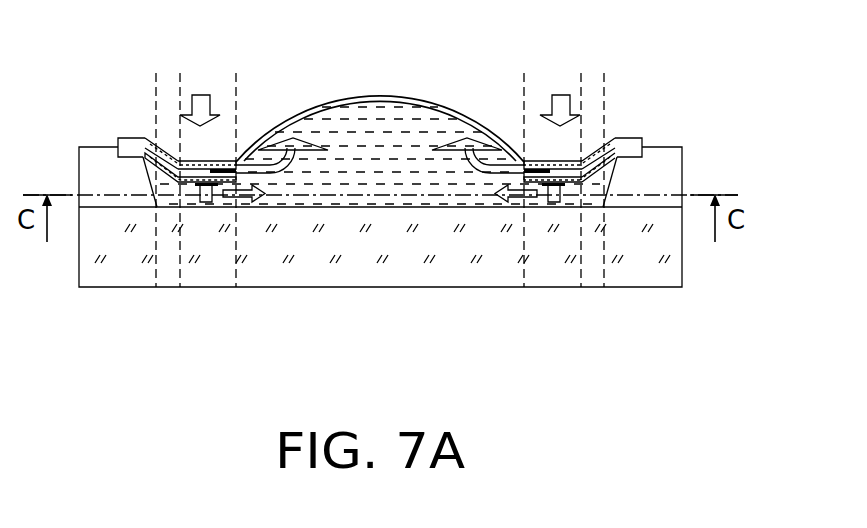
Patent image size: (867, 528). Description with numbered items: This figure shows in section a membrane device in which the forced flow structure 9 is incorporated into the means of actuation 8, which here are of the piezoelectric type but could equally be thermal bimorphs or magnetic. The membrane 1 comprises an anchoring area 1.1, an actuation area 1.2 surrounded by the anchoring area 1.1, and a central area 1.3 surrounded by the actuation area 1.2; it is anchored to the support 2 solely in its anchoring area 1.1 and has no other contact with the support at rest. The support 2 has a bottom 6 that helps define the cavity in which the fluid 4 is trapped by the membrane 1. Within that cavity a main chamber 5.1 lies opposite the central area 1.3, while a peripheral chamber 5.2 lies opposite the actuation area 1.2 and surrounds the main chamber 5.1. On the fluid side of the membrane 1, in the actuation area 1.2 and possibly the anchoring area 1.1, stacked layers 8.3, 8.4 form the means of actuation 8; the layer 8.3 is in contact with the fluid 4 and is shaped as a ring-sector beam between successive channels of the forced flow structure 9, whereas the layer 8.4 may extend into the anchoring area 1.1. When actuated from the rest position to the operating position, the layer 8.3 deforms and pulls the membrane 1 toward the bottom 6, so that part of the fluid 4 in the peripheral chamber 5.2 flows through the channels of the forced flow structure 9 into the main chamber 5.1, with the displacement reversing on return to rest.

The membrane 1 is at (391, 93).
The anchoring area 1.1 is at (633, 138).
The actuation area 1.2 is at (540, 160).
The central area 1.3 is at (443, 107).
The support 2 is at (660, 262).
The fluid 4 is at (365, 128).
The main chamber 5.1 is at (387, 185).
The peripheral chamber 5.2 is at (168, 187).
The bottom 6 is at (484, 207).
The means of actuation 8 is at (285, 77).
The layer 8.3 is at (180, 162).
The layer 8.4 is at (160, 150).
The forced flow structure 9 is at (160, 150).